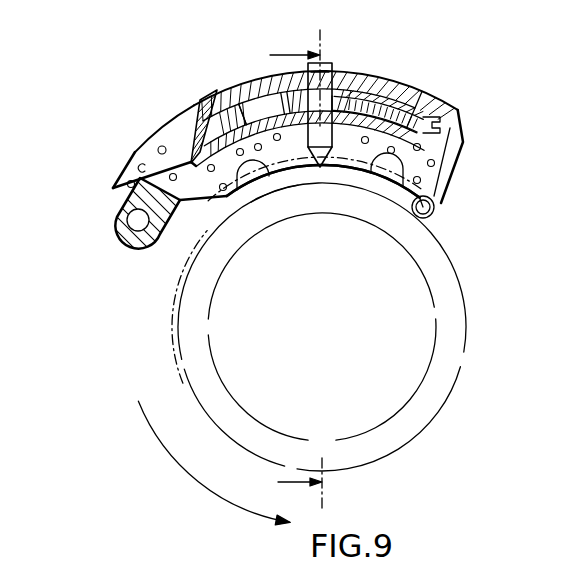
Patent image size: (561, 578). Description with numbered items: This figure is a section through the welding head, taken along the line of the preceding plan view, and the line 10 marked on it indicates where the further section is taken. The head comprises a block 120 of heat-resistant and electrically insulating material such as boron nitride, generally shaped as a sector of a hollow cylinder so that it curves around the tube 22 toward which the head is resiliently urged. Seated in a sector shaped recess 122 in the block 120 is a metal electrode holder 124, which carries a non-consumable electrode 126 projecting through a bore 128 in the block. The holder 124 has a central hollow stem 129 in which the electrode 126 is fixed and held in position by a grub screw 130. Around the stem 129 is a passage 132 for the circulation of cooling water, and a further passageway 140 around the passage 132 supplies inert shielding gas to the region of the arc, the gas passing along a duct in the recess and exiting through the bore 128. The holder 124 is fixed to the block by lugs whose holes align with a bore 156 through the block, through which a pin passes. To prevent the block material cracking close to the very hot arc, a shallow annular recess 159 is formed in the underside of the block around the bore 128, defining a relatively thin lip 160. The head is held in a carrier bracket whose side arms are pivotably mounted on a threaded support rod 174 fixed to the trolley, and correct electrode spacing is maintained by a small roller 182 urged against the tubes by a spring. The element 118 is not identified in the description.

The section line 10— 10 is at (230, 274).
The tube 22 is at (447, 346).
The clamp housing 118 is at (197, 102).
The block 120 is at (206, 232).
The sector shaped recess 122 is at (268, 188).
The electrode holder 124 is at (256, 108).
The non-consumable electrode 126 is at (338, 100).
The bore 128 is at (351, 172).
The central hollow stem 129 is at (322, 103).
The grub screw 130 is at (412, 103).
The passage 132 is at (249, 103).
The passageway 140 is at (198, 132).
The bore 156 is at (155, 156).
The shallow annular recess 159 is at (265, 200).
The lip 160 is at (288, 173).
The threaded support rod 174 is at (139, 222).
The roller 182 is at (435, 208).